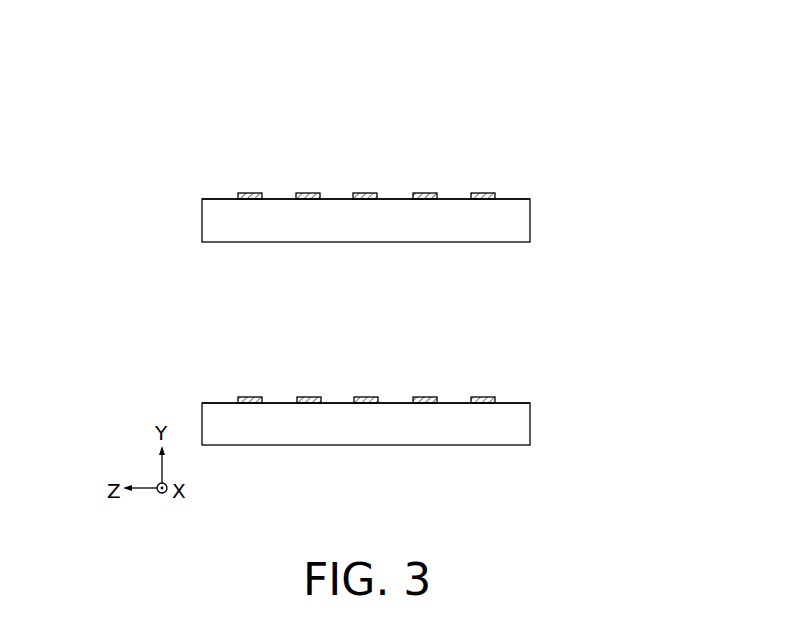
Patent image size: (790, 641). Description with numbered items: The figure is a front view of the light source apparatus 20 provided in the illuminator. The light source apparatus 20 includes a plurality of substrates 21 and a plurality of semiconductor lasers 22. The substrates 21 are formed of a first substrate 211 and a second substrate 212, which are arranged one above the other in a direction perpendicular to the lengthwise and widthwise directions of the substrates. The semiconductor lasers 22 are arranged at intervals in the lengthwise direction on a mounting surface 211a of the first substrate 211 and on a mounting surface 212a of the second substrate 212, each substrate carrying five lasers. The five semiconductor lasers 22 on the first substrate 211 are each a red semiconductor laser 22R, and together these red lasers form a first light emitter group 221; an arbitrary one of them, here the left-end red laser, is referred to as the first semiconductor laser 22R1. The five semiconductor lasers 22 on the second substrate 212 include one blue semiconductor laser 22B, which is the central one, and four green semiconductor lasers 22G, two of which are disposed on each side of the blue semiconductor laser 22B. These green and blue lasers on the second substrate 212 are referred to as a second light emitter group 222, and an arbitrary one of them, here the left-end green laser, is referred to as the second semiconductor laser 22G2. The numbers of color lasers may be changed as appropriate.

The light source apparatus 20 is at (395, 80).
The substrate 21 is at (431, 268).
The semiconductor laser 22 is at (431, 268).
The first light emitter group 221 is at (507, 168).
The second light emitter group 222 is at (507, 372).
The first substrate 211 is at (517, 222).
The second substrate 212 is at (517, 424).
The mounting surface of first substrate 211a is at (513, 198).
The mounting surface of second substrate 212a is at (513, 402).
The first semiconductor laser 22R1 is at (252, 192).
The red semiconductor laser 22R is at (488, 192).
The second semiconductor laser 22G2 is at (252, 396).
The green semiconductor laser 22G is at (488, 396).
The blue semiconductor laser 22B is at (370, 396).